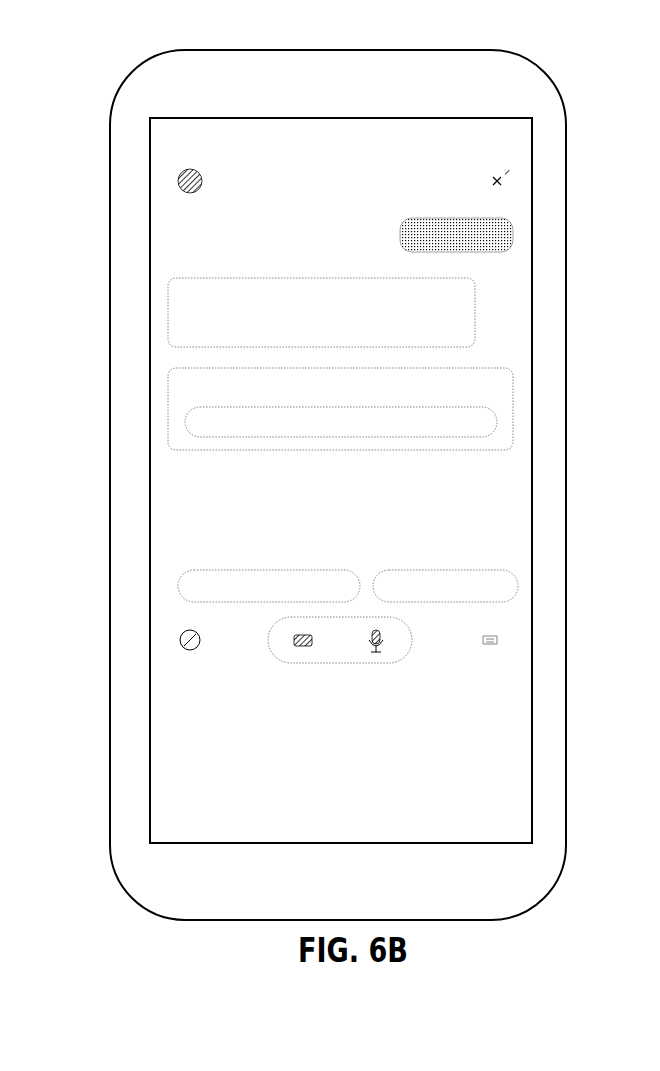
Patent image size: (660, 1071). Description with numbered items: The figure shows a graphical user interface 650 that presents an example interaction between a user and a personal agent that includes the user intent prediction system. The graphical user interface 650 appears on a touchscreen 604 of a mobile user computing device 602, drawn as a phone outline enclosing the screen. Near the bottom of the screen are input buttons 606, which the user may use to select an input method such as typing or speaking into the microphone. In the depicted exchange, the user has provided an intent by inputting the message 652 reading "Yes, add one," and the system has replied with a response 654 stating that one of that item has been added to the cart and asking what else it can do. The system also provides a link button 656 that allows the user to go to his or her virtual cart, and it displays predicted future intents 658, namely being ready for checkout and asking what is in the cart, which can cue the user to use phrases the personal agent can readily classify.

The graphical user interface 650 is at (92, 86).
The mobile user computing device 602 is at (566, 780).
The touchscreen 604 is at (532, 688).
The input buttons 606 is at (329, 673).
The user message bubble 652 is at (519, 202).
The assistant response message 654 is at (184, 276).
The link button 656 is at (167, 401).
The predicted future intents 658 is at (189, 563).